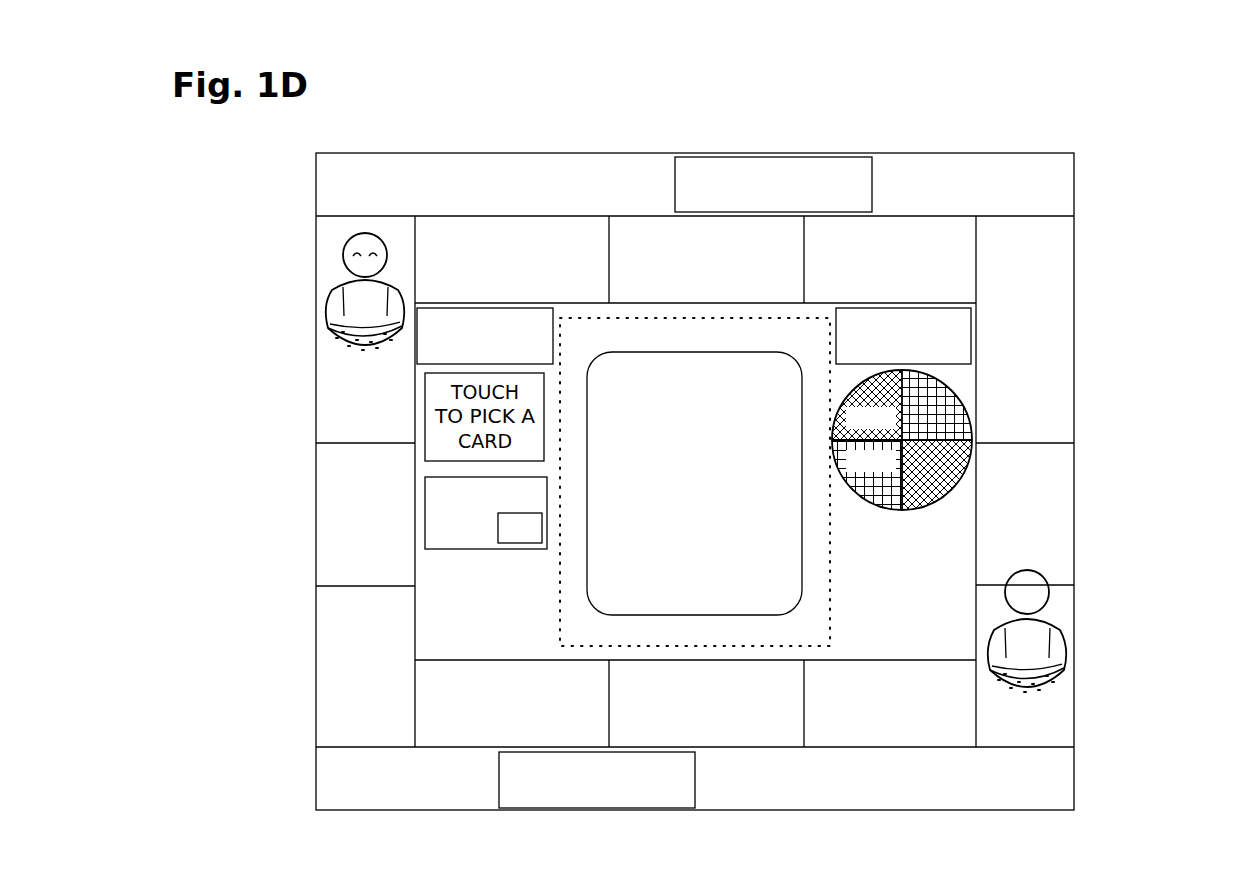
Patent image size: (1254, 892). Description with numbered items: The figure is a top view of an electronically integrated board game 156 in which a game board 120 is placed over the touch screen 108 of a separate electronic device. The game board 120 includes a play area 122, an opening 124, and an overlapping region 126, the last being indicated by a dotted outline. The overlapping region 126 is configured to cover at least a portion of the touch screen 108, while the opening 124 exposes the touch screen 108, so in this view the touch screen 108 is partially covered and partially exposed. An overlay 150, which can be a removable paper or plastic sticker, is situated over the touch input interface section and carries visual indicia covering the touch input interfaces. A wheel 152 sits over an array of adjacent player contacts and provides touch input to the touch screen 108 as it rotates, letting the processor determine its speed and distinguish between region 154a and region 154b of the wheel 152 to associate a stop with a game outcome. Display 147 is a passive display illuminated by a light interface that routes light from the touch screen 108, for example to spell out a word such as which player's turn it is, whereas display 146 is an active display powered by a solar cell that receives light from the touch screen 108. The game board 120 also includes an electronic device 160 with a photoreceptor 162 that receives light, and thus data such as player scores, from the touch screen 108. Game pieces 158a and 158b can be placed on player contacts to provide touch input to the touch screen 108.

The electronically integrated board game 156 is at (1164, 125).
The game board 120 is at (1085, 324).
The play area 122 is at (1022, 799).
The touch screen 108 is at (676, 514).
The opening 124 is at (735, 483).
The overlapping region 126 is at (802, 629).
The display 146 is at (887, 356).
The display 147 is at (469, 356).
The overlay 150 is at (1050, 528).
The wheel 152 is at (939, 440).
The region 154a is at (850, 426).
The region 154b is at (850, 469).
The game piece 158a is at (346, 313).
The game piece 158b is at (1007, 655).
The electronic device 160 is at (471, 511).
The photoreceptor 162 is at (504, 538).